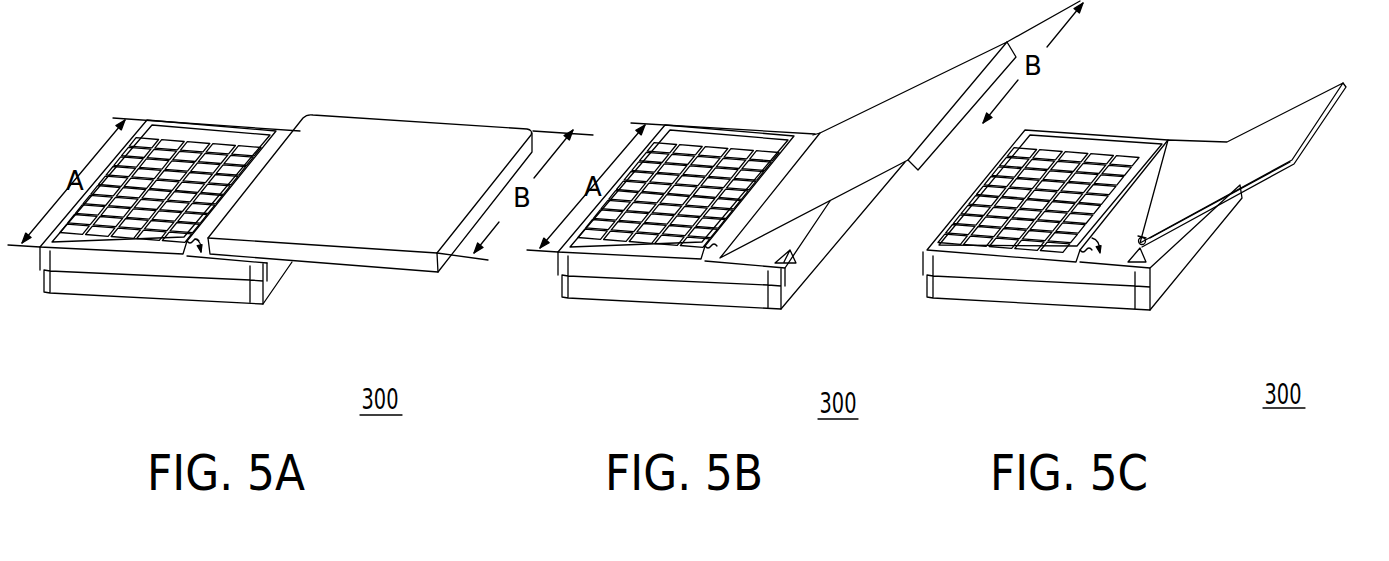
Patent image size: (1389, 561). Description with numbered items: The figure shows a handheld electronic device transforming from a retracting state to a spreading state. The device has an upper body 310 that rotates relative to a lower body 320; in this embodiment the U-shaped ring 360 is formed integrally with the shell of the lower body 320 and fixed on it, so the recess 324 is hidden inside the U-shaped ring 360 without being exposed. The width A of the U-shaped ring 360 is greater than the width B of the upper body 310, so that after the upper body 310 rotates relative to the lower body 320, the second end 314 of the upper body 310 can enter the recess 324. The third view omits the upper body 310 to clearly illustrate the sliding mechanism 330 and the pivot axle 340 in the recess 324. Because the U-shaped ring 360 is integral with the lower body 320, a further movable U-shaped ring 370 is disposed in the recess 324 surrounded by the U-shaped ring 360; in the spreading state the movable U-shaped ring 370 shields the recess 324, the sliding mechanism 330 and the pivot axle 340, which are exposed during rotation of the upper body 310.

In FIG. 5A, the upper body 310 is at (395, 262).
In FIG. 5B, the upper body 310 is at (883, 187).
In FIG. 5C, the upper body 310 is at (1243, 165).
In FIG. 5A, the second end 314 is at (275, 148).
In FIG. 5B, the second end 314 is at (790, 166).
In FIG. 5C, the second end 314 is at (1047, 196).
In FIG. 5A, the lower body 320 is at (113, 285).
In FIG. 5B, the lower body 320 is at (647, 293).
In FIG. 5C, the lower body 320 is at (1017, 292).
In FIG. 5A, the recess 324 is at (185, 245).
In FIG. 5B, the recess 324 is at (786, 250).
In FIG. 5C, the recess 324 is at (1088, 258).
In FIG. 5C, the sliding mechanism 330 is at (1188, 216).
In FIG. 5C, the pivot axle 340 is at (1147, 242).
In FIG. 5A, the U-shaped ring 360 is at (227, 277).
In FIG. 5B, the U-shaped ring 360 is at (750, 282).
In FIG. 5C, the U-shaped ring 360 is at (1118, 285).
In FIG. 5B, the movable U-shaped ring 370 is at (797, 253).
In FIG. 5C, the movable U-shaped ring 370 is at (1143, 262).